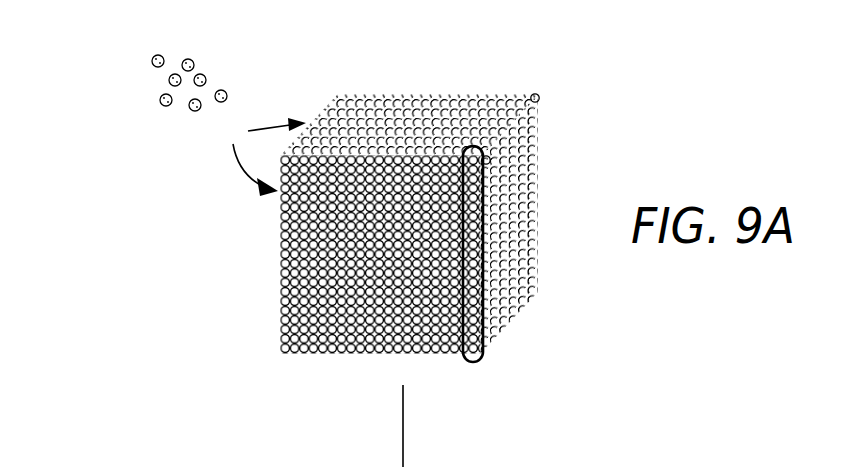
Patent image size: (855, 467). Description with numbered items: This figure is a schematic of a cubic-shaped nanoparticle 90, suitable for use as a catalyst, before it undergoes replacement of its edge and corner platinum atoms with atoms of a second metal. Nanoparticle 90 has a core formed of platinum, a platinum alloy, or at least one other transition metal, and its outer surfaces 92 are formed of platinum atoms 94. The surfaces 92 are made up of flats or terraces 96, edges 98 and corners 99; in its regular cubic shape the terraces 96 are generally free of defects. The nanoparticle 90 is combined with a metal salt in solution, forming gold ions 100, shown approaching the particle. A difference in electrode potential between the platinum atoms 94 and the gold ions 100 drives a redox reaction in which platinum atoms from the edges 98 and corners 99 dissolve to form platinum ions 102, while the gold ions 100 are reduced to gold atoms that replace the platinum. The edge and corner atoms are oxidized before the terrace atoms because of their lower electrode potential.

The nanoparticle 90 is at (416, 189).
The outer surfaces 92 is at (262, 157).
The platinum atoms 94 is at (510, 145).
The terraces 96 is at (403, 108).
The edges 98 is at (478, 271).
The corners 99 is at (528, 88).
The gold ions 100 is at (152, 92).
The platinum ions 102 is at (525, 426).